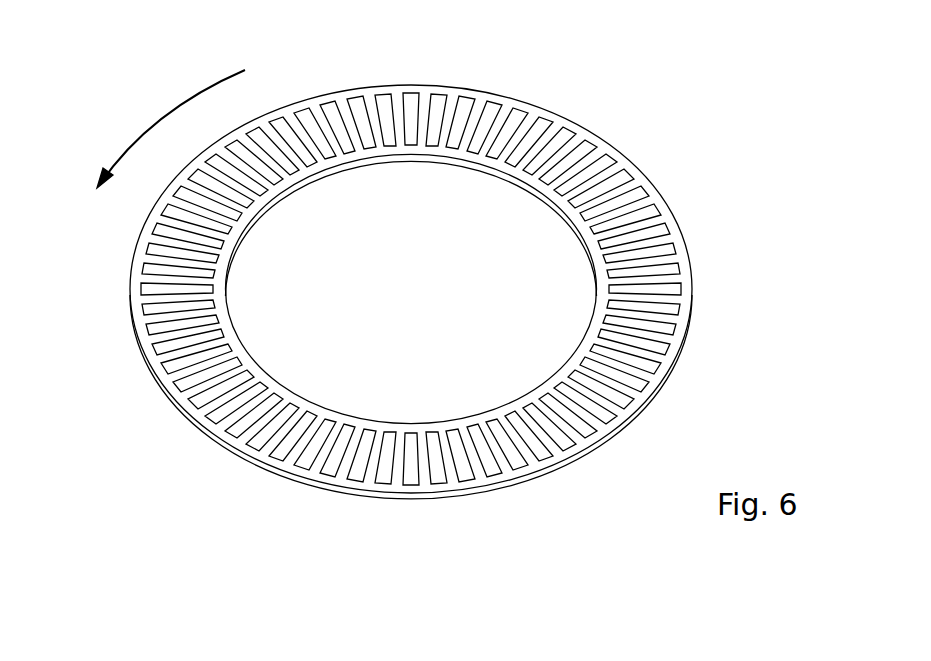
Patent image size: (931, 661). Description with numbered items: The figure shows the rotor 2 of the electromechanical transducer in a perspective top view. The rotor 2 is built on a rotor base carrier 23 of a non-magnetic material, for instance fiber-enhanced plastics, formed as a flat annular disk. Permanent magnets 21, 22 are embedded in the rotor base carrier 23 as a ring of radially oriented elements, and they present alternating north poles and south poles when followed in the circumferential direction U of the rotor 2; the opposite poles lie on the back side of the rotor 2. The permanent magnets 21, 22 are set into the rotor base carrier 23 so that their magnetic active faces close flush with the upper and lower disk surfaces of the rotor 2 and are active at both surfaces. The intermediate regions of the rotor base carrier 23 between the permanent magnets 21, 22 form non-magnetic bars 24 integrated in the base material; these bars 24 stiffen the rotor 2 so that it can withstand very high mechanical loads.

The rotor 2 is at (433, 257).
The permanent magnet 21 is at (385, 102).
The permanent magnet 22 is at (360, 105).
The rotor base carrier 23 is at (558, 118).
The non-magnetic bar 24 is at (374, 105).
The circumferential direction U is at (162, 120).